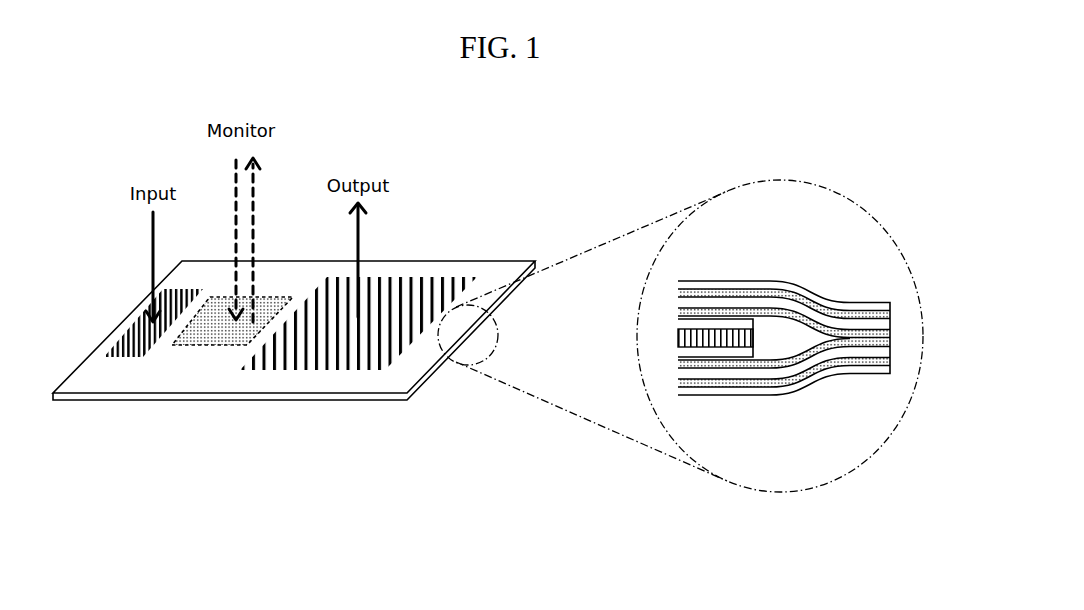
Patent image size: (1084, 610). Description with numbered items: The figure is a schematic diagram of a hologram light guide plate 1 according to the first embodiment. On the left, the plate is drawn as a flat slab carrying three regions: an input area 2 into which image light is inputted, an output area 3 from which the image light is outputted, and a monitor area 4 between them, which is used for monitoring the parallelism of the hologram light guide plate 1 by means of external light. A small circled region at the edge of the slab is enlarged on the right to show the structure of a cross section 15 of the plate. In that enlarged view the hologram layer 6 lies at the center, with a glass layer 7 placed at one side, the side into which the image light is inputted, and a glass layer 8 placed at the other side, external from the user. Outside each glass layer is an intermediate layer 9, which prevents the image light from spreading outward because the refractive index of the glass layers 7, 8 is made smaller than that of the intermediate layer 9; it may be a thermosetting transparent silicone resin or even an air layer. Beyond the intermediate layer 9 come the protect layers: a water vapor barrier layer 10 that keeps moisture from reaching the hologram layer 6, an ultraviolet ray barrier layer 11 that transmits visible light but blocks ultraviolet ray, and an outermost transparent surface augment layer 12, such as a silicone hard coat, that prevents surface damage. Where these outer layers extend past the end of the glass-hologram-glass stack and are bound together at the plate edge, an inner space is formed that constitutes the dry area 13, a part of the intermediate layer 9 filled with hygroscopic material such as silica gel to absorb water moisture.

The hologram light guide plate 1 is at (73, 396).
The input area 2 is at (142, 330).
The output area 3 is at (418, 290).
The monitor area 4 is at (220, 330).
The hologram layer 6 is at (680, 333).
The glass layer 7 is at (680, 323).
The glass layer 8 is at (680, 352).
The intermediate layer 9 is at (893, 332).
The water vapor barrier layer 10 is at (893, 320).
The ultraviolet ray barrier layer 11 is at (893, 307).
The surface augment layer 12 is at (847, 303).
The dry area 13 is at (772, 333).
The cross section 15 is at (470, 367).